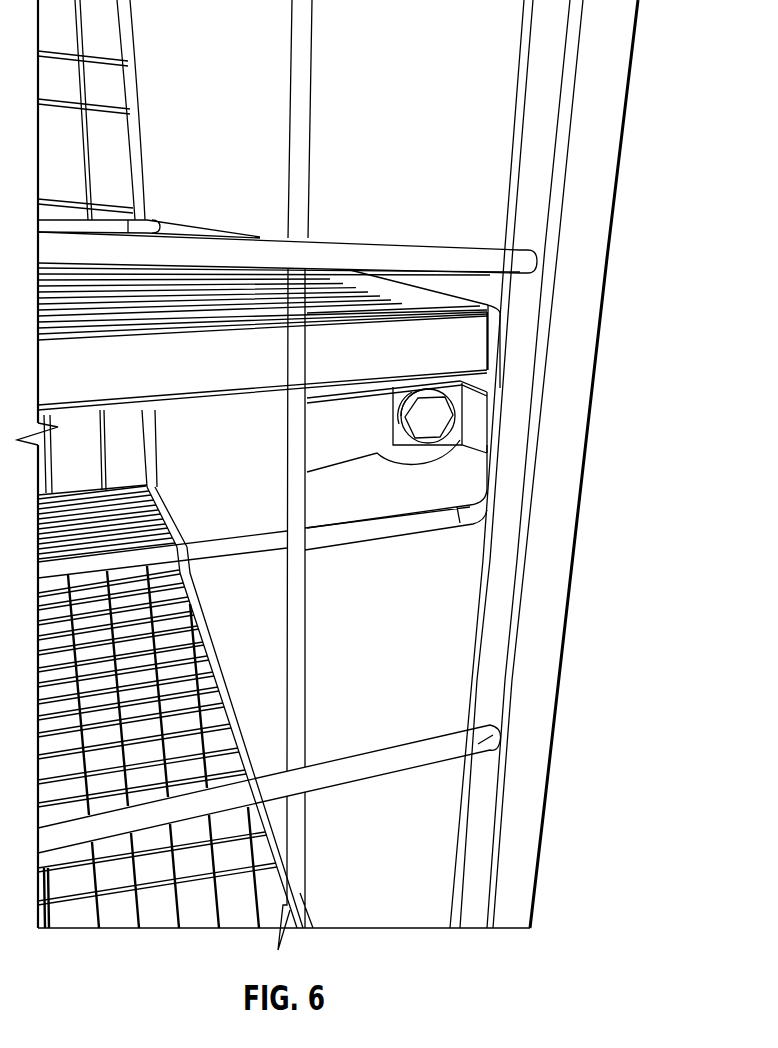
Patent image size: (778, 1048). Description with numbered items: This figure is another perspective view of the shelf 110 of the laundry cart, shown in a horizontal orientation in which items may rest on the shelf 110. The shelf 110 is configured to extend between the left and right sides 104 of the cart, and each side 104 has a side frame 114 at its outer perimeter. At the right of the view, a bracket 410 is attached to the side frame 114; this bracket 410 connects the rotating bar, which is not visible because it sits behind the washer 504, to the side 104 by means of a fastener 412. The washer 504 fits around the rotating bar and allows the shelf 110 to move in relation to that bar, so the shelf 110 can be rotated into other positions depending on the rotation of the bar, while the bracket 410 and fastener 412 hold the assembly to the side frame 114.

The side 104 is at (500, 728).
The shelf 110 is at (477, 343).
The side frame 114 is at (520, 393).
The bracket 410 is at (473, 407).
The fastener 412 is at (430, 420).
The washer 504 is at (425, 460).